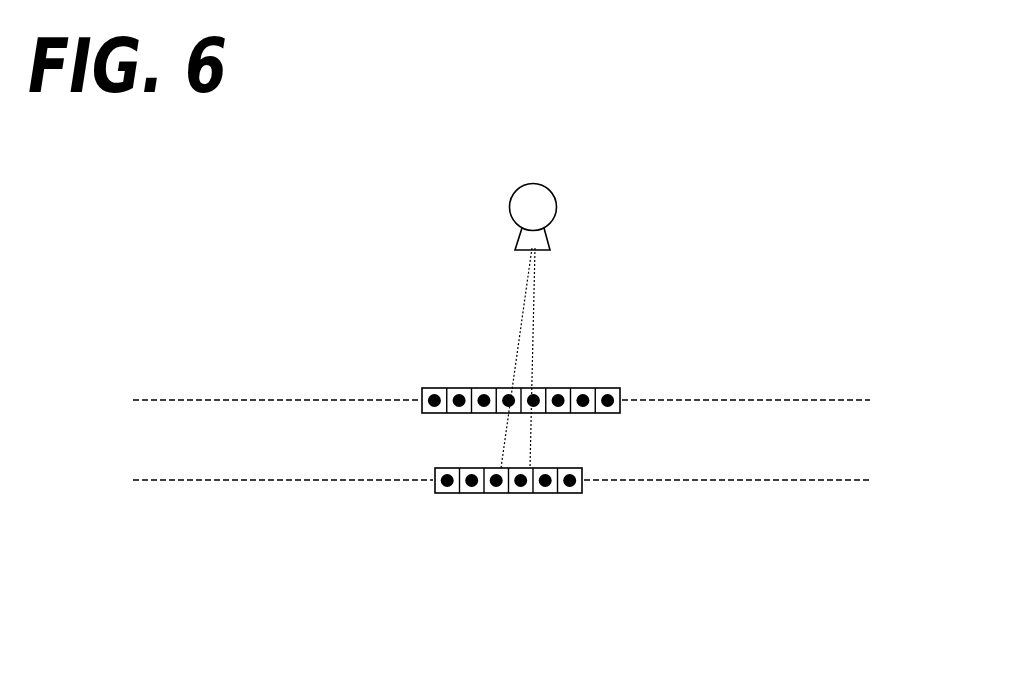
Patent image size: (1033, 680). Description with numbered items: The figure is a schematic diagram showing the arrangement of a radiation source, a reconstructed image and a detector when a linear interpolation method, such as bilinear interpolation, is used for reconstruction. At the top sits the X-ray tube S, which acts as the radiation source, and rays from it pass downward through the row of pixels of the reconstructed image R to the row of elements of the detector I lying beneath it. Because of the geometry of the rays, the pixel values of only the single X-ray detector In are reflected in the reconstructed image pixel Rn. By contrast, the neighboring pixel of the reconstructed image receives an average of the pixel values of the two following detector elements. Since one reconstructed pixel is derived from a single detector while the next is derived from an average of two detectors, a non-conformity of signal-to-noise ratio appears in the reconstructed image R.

The X-ray tube S is at (520, 213).
The reconstructed image R is at (572, 416).
The reconstructed image pixel Rn is at (503, 387).
The detector I is at (468, 457).
The X-ray detector In is at (495, 496).